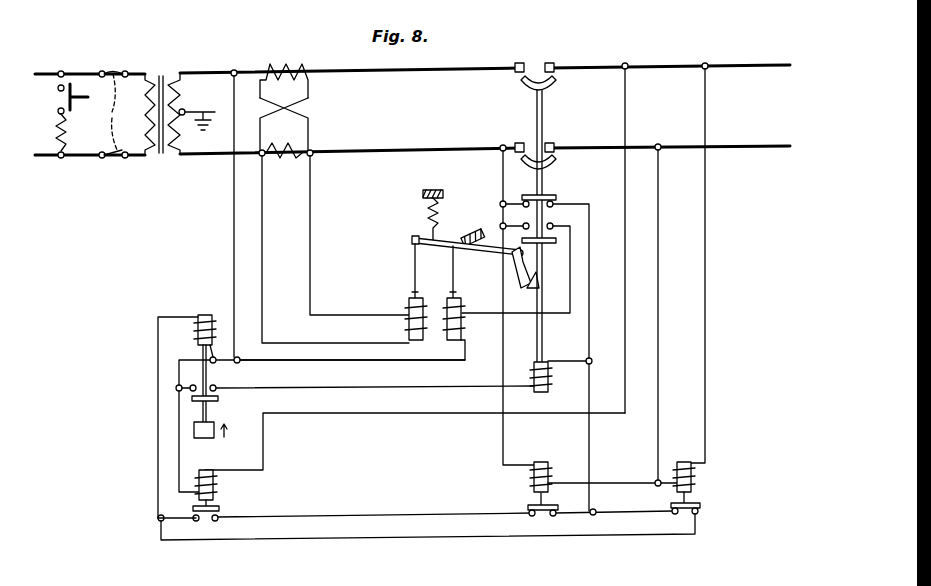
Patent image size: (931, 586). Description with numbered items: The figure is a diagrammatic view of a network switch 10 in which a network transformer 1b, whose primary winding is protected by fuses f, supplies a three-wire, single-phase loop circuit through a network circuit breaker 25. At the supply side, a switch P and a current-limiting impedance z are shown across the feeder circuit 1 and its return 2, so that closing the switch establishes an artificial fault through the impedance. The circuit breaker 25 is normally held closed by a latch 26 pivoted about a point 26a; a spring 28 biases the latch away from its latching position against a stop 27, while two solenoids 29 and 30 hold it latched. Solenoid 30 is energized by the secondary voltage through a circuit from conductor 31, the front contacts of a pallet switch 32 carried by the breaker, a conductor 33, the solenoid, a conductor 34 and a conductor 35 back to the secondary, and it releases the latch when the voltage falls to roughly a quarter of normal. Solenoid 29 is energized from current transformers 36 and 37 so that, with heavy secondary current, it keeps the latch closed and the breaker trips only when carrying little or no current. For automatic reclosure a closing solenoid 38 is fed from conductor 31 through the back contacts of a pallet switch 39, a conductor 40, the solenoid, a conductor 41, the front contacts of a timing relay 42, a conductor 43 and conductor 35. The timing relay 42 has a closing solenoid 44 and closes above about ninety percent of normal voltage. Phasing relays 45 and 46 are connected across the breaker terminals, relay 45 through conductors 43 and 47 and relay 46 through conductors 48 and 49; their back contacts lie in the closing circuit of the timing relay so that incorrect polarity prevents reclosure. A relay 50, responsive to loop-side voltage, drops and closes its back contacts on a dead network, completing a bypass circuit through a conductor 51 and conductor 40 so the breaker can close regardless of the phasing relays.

The feeder circuit 1 is at (72, 70).
The network transformer 1b is at (166, 65).
The supply terminal contact 2 is at (77, 162).
The switch P is at (80, 103).
The current-limiting impedance z is at (50, 129).
The fuses f is at (119, 113).
The network switch 10 is at (160, 245).
The network circuit breaker 25 is at (545, 110).
The latch 26 is at (497, 256).
The pivot point 26a is at (510, 270).
The stop 27 is at (478, 240).
The spring 28 is at (425, 213).
The solenoid 29 is at (408, 303).
The solenoid 30 is at (464, 306).
The conductor 31 is at (502, 168).
The pallet switch 32 is at (533, 246).
The conductor 33 is at (551, 318).
The conductor 34 is at (372, 368).
The conductor 35 is at (233, 222).
The current transformer 36 is at (285, 162).
The current transformer 37 is at (294, 68).
The closing solenoid 38 is at (548, 392).
The pallet switch 39 is at (556, 192).
The conductor 40 is at (591, 290).
The conductor 41 is at (420, 372).
The timing relay 42 is at (208, 375).
The conductor 43 is at (187, 357).
The closing solenoid 44 is at (210, 309).
The phasing relay 45 is at (222, 490).
The phasing relay 46 is at (532, 482).
The conductor 47 is at (424, 412).
The conductor 48 is at (633, 472).
The conductor 49 is at (660, 290).
The relay 50 is at (700, 488).
The conductor 51 is at (348, 536).